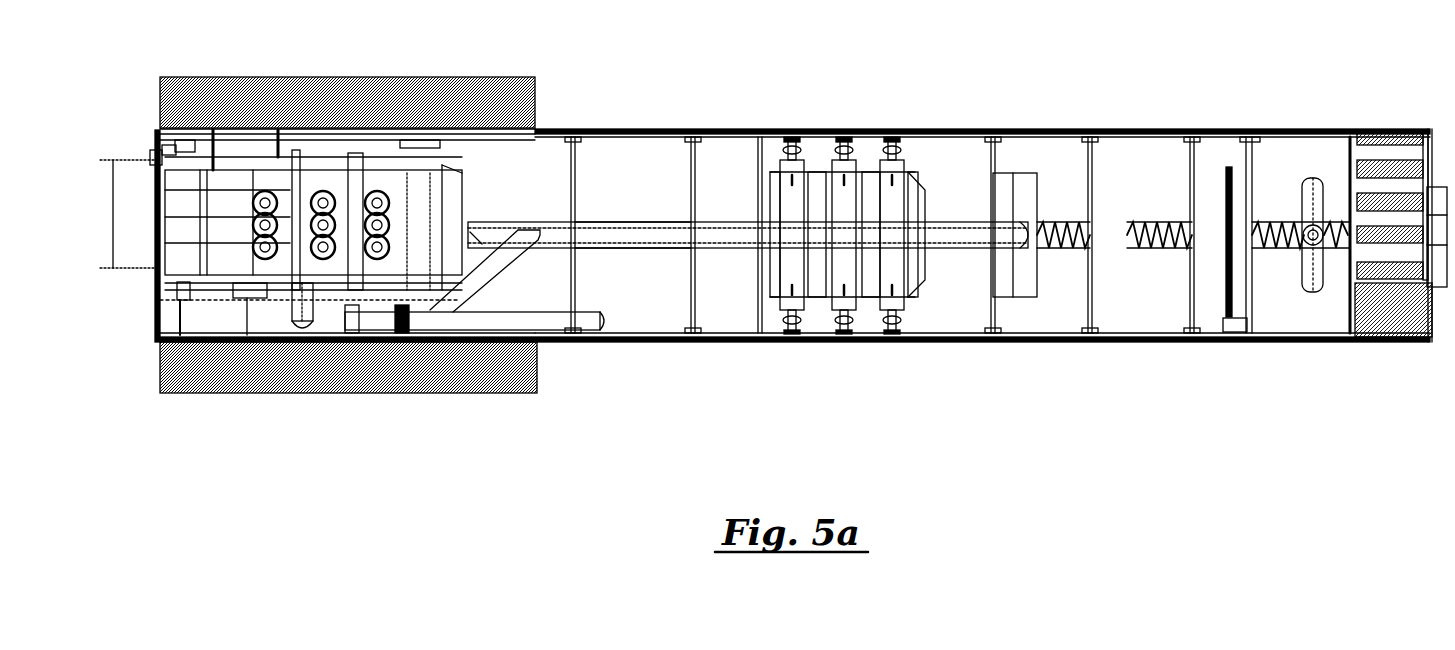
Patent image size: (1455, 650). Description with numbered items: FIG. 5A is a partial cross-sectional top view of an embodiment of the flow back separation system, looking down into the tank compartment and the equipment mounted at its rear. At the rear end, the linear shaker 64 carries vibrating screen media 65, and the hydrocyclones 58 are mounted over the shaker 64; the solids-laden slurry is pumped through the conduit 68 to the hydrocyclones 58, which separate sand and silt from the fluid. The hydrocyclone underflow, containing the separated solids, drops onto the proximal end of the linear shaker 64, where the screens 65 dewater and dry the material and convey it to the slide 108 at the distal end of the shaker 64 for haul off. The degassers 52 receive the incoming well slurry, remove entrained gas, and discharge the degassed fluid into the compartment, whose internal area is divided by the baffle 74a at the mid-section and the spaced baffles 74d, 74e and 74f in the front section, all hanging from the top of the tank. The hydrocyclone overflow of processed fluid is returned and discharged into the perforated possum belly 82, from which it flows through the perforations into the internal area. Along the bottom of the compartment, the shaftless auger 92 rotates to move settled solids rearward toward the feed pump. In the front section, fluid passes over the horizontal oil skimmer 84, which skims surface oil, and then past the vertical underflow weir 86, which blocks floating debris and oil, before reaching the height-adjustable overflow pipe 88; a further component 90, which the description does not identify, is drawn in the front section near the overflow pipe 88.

The degasser 52 is at (800, 136).
The hydrocyclone 58 is at (362, 180).
The linear shaker 64 is at (158, 158).
The vibrating screen media 65 is at (255, 185).
The conduit 68 is at (583, 330).
The baffle 74a is at (708, 190).
The baffle 74d is at (1010, 310).
The baffle 74e is at (1105, 195).
The baffle 74f is at (1222, 217).
The possum belly 82 is at (1030, 195).
The oil skimmer 84 is at (1240, 295).
The underflow weir 86 is at (1233, 195).
The overflow pipe 88 is at (1320, 177).
The fan 90 is at (1318, 292).
The shaftless auger 92 is at (1158, 250).
The slide 108 is at (133, 283).